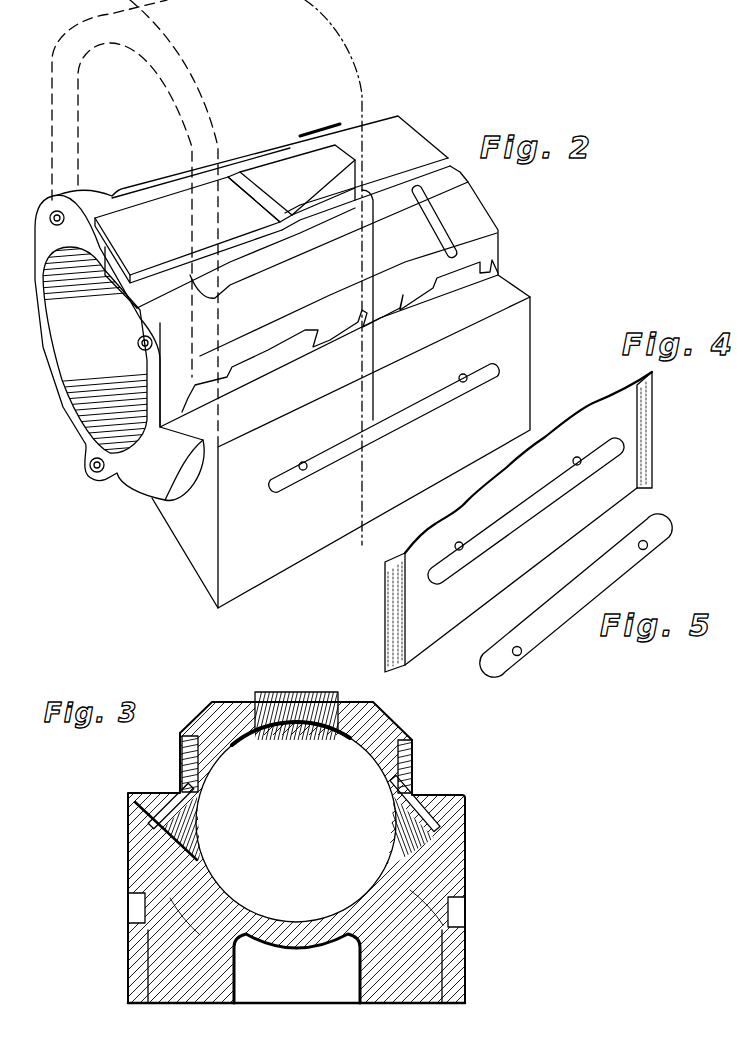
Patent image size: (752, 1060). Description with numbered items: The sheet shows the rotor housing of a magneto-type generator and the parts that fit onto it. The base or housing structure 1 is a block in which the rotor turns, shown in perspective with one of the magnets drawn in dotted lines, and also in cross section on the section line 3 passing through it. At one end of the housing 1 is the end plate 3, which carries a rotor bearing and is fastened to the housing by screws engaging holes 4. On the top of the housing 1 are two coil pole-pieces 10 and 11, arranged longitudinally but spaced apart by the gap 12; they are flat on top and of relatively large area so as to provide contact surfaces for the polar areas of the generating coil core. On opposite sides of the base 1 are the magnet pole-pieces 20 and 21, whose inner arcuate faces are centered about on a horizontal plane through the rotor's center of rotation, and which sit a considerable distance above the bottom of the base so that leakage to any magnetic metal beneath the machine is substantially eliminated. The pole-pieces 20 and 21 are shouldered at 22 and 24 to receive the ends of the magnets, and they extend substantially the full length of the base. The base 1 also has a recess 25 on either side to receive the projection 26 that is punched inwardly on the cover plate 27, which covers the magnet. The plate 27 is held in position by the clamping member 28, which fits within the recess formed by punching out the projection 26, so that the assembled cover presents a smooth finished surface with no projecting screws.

In FIG. 2, the base or housing structure 1 is at (195, 533).
In FIG. 3, the base or housing structure 1 is at (128, 877).
In FIG. 2, the end plate 3 is at (363, 190).
In FIG. 2, the holes 4 is at (90, 470).
In FIG. 2, the coil pole-piece 10 is at (188, 230).
In FIG. 2, the coil pole-piece 11 is at (366, 188).
In FIG. 3, the coil pole-piece 11 is at (277, 697).
In FIG. 2, the space between pole-pieces 12 is at (273, 190).
In FIG. 3, the magnet pole-piece 20 is at (198, 833).
In FIG. 3, the magnet pole-piece 21 is at (393, 838).
In FIG. 3, the shoulder 22 is at (183, 770).
In FIG. 3, the shoulder 24 is at (413, 778).
In FIG. 2, the recess 25 is at (345, 453).
In FIG. 3, the recess 25 is at (135, 915).
In FIG. 4, the projection 26 is at (517, 512).
In FIG. 4, the cover plate 27 is at (414, 640).
In FIG. 5, the clamping member 28 is at (575, 620).